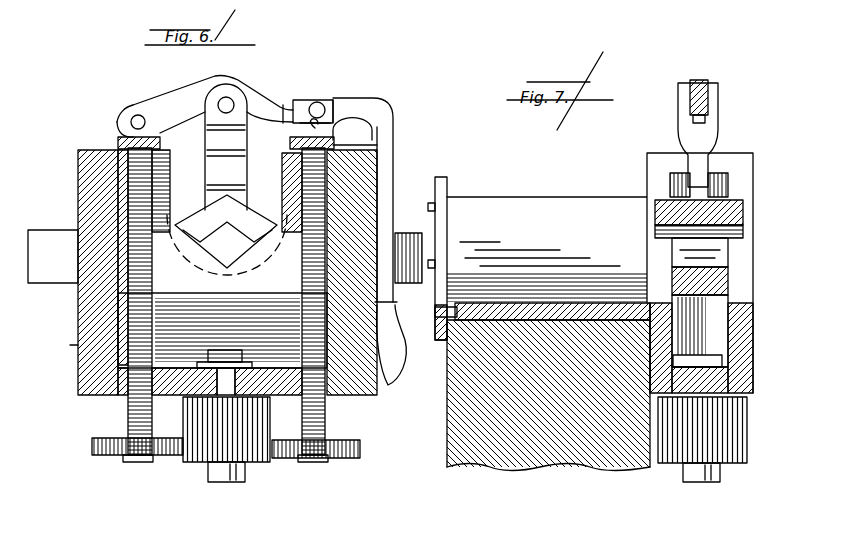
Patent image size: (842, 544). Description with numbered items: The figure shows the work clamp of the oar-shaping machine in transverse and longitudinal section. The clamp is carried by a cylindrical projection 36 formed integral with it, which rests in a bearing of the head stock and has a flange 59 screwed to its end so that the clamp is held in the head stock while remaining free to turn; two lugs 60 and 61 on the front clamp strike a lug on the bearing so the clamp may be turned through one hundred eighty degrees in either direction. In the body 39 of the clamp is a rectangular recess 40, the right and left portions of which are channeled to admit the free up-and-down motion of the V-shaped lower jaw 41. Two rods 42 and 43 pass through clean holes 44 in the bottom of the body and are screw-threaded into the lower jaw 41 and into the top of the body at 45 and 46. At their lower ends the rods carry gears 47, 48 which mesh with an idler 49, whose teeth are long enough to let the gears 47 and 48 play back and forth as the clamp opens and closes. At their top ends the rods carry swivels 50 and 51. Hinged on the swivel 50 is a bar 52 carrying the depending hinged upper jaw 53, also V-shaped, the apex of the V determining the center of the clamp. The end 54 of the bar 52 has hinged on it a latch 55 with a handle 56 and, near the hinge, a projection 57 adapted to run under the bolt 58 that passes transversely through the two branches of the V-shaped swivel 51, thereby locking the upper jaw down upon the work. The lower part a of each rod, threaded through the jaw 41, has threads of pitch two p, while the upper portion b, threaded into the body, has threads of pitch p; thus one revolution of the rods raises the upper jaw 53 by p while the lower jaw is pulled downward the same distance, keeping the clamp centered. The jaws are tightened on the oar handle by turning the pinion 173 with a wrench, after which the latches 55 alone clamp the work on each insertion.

In FIG. 7, the cylindrical projection 36 is at (600, 312).
In FIG. 6, the body 39 is at (81, 272).
In FIG. 6, the rectangular recess 40 is at (323, 192).
In FIG. 6, the lower jaw 41 is at (247, 283).
In FIG. 7, the lower jaw 41 is at (718, 274).
In FIG. 6, the rod 42 is at (222, 330).
In FIG. 6, the rod 43 is at (310, 352).
In FIG. 6, the clean holes 44 is at (125, 405).
In FIG. 6, the threaded top portion of body 45 is at (165, 205).
In FIG. 7, the threaded top portion of body 45 is at (715, 337).
In FIG. 6, the threaded top portion of body 46 is at (300, 186).
In FIG. 6, the gear 47 is at (112, 462).
In FIG. 6, the gear 48 is at (316, 469).
In FIG. 6, the idler 49 is at (188, 465).
In FIG. 7, the idler 49 is at (709, 446).
In FIG. 6, the swivel 50 is at (130, 108).
In FIG. 6, the swivel 51 is at (363, 133).
In FIG. 6, the bar 52 is at (205, 86).
In FIG. 7, the bar 52 is at (704, 75).
In FIG. 6, the upper jaw 53 is at (226, 176).
In FIG. 7, the upper jaw 53 is at (725, 105).
In FIG. 6, the end of bar 54 is at (285, 103).
In FIG. 6, the latch 55 is at (385, 150).
In FIG. 6, the handle 56 is at (400, 370).
In FIG. 6, the projection 57 is at (322, 126).
In FIG. 6, the bolt 58 is at (313, 132).
In FIG. 7, the flange 59 is at (450, 190).
In FIG. 6, the lug 60 is at (56, 226).
In FIG. 6, the lug 61 is at (408, 238).
In FIG. 6, the pinion 173 is at (226, 491).
In FIG. 6, the lower part of rod a is at (61, 346).
In FIG. 6, the upper portion of rod b is at (130, 160).